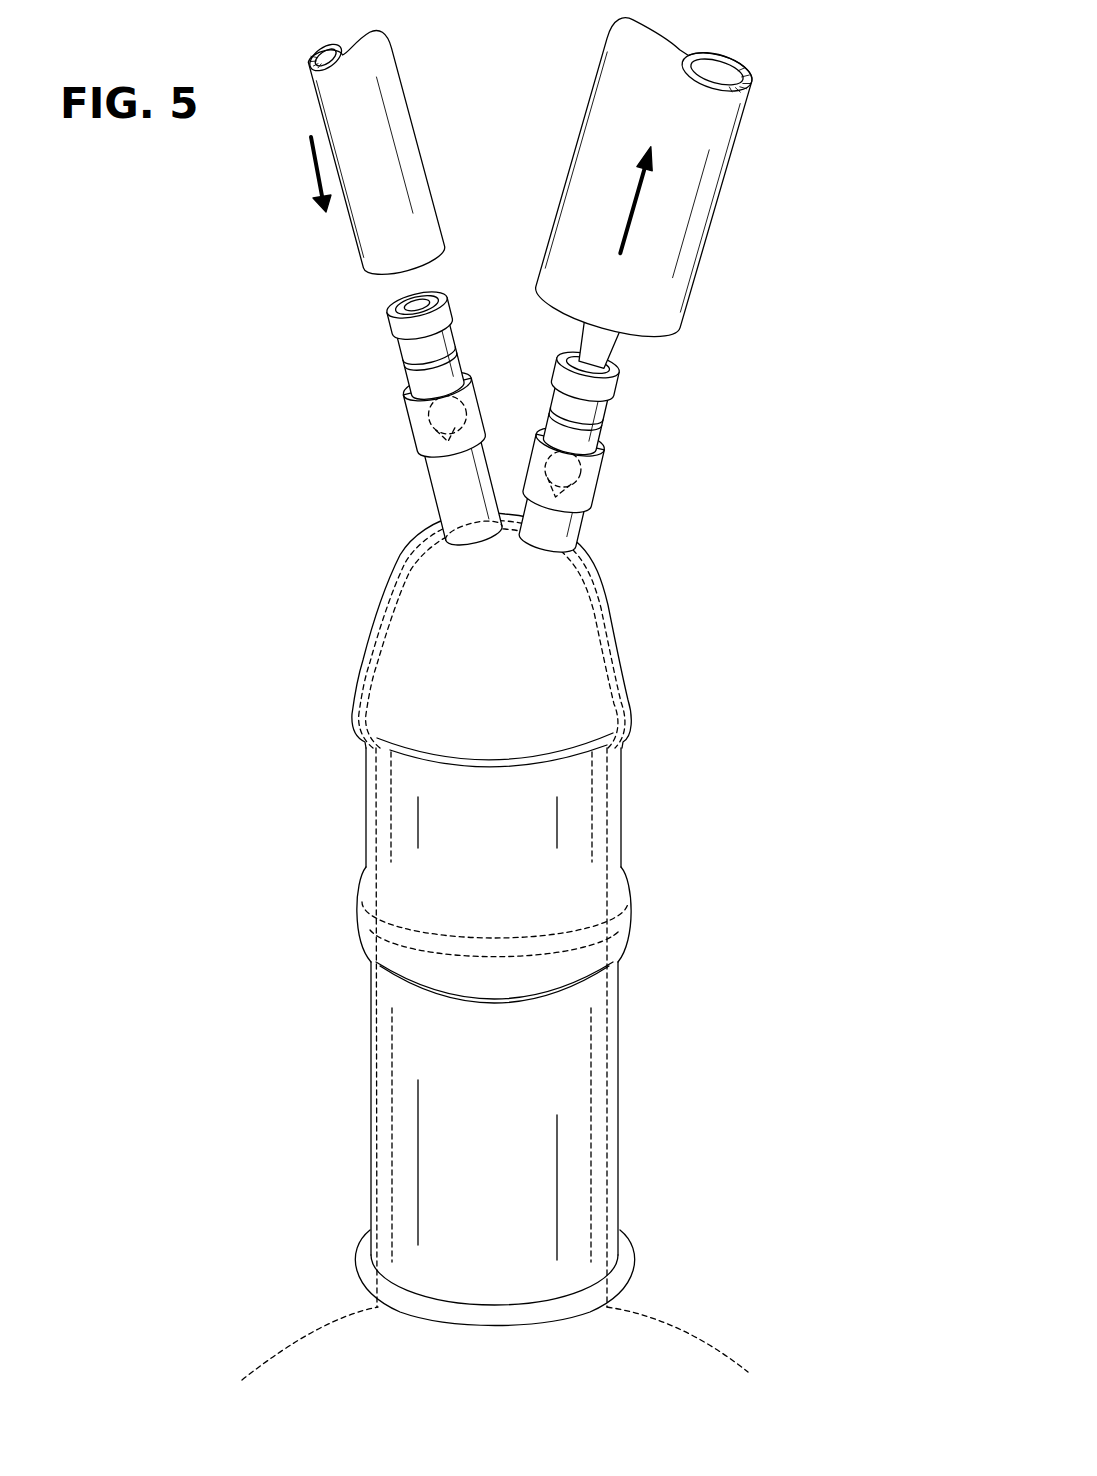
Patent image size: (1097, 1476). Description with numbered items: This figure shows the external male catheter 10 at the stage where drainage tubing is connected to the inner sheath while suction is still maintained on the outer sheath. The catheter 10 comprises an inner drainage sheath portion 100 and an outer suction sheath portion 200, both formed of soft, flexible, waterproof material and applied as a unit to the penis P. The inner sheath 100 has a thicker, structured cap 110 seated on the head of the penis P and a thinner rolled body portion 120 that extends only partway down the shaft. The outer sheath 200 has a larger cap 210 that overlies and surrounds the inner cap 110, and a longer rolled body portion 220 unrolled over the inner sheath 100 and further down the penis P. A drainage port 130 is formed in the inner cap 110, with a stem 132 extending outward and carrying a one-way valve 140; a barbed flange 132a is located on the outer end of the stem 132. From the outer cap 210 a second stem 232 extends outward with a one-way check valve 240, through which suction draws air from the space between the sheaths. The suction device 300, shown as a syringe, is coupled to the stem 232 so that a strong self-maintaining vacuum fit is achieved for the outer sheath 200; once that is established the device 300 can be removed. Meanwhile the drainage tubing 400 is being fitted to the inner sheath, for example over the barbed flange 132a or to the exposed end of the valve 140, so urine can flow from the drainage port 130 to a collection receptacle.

The external male catheter 10 is at (507, 805).
The inner drainage sheath portion 100 is at (625, 882).
The cap 110 is at (620, 653).
The rolled body portion 120 is at (617, 958).
The drainage port 130 is at (472, 543).
The stem 132 is at (383, 404).
The barbed flange 132a is at (388, 322).
The one-way valve 140 is at (420, 412).
The outer suction sheath portion 200 is at (632, 1237).
The cap 210 is at (610, 607).
The rolled body portion 220 is at (620, 1273).
The stem 232 is at (642, 461).
The one-way check valve 240 is at (600, 470).
The suction source or device 300 is at (703, 213).
The drainage tubing 400 is at (395, 115).
The penis P is at (618, 1077).